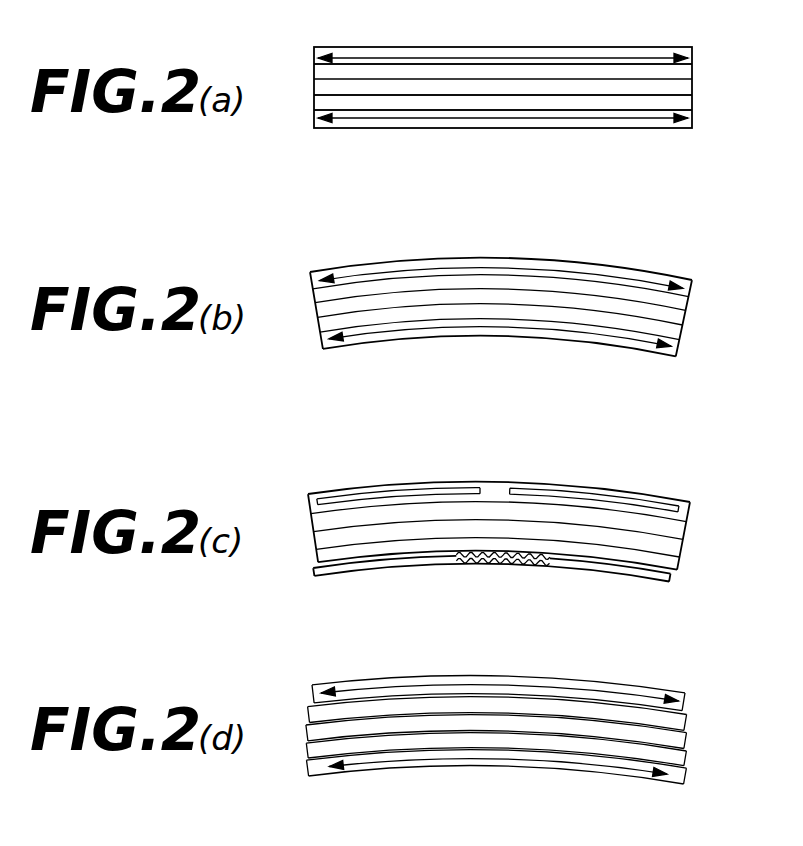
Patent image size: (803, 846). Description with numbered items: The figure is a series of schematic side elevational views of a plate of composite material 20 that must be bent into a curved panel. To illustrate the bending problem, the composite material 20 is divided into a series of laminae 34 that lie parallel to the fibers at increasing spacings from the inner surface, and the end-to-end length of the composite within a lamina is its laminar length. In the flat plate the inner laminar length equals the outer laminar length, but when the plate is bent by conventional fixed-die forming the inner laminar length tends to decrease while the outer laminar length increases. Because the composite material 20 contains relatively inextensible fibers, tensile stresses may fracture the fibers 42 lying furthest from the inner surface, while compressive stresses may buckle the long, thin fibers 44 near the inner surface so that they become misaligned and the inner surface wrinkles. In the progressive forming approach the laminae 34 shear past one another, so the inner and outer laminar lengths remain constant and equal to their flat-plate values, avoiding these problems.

The composite material 20 is at (648, 24).
The laminae 34 is at (696, 115).
The fibers lying furthest from the inner surface 42 is at (380, 493).
The fibers lying near to the inner surface 44 is at (452, 566).